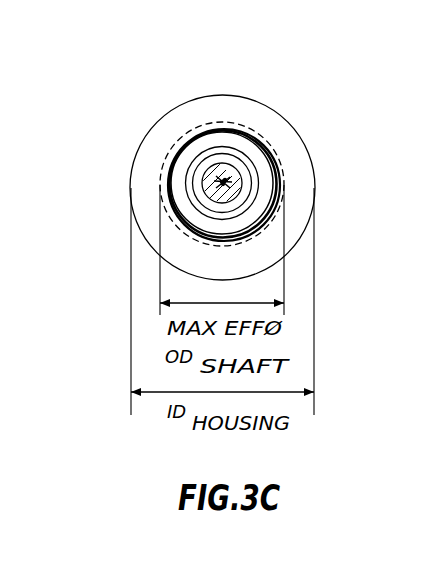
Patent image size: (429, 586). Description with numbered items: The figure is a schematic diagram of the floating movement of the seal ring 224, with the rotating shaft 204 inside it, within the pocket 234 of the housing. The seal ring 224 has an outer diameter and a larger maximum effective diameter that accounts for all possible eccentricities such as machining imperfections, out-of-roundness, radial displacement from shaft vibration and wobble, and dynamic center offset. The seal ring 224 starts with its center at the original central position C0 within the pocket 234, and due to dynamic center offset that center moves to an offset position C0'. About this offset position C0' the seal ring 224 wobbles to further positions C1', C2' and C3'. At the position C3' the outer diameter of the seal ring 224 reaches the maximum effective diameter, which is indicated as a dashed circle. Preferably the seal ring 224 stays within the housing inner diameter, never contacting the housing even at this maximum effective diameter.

The pocket 234 is at (223, 107).
The seal ring 224 is at (165, 165).
The rotating shaft 204 is at (193, 237).
The original center position C0 is at (150, 192).
The offset position C0' is at (302, 161).
The wobble position C1' is at (148, 132).
The wobble position C2' is at (278, 130).
The wobble position at maximum effective diameter C3' is at (308, 216).